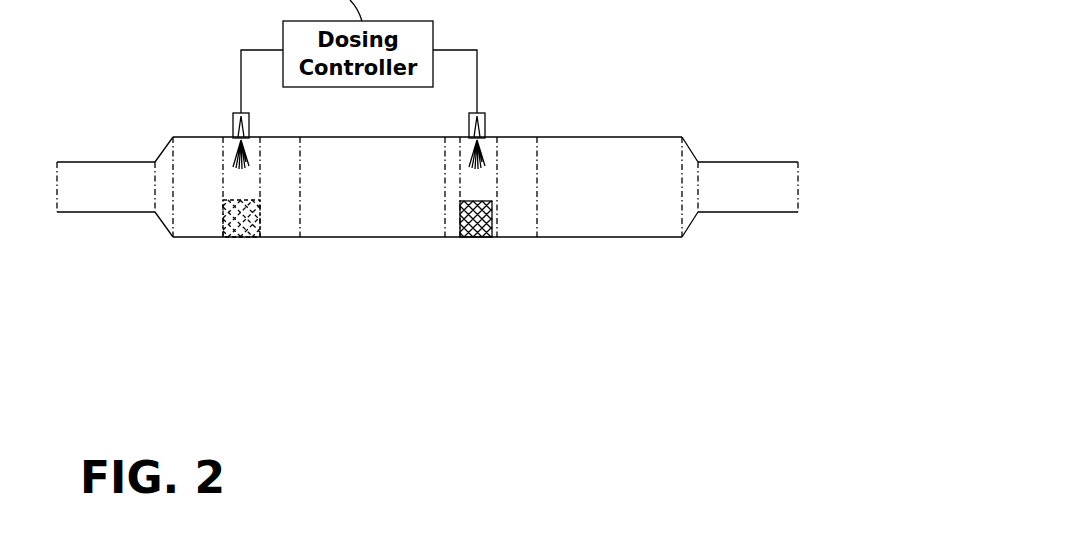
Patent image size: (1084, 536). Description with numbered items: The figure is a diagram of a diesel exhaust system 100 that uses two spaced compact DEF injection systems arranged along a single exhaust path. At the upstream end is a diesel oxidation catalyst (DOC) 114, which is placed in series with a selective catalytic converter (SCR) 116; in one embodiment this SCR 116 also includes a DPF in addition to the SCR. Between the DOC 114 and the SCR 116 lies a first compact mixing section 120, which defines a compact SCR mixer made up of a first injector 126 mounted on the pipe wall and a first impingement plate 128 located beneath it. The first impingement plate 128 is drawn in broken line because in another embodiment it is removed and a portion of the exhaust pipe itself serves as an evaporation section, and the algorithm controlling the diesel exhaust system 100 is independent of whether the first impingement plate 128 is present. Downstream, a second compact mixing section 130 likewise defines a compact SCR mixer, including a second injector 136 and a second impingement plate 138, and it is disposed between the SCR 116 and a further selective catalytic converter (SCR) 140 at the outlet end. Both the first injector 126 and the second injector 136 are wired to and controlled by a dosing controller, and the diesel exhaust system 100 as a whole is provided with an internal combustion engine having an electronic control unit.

The diesel exhaust system 100 is at (148, 333).
The diesel oxidation catalyst 114 is at (197, 240).
The selective catalytic converter 116 is at (428, 240).
The first compact mixing section 120 is at (249, 246).
The first injector 126 is at (232, 125).
The first impingement plate 128 is at (238, 243).
The second compact mixing section 130 is at (470, 246).
The second injector 136 is at (485, 122).
The second impingement plate 138 is at (478, 243).
The selective catalytic converter 140 is at (643, 137).